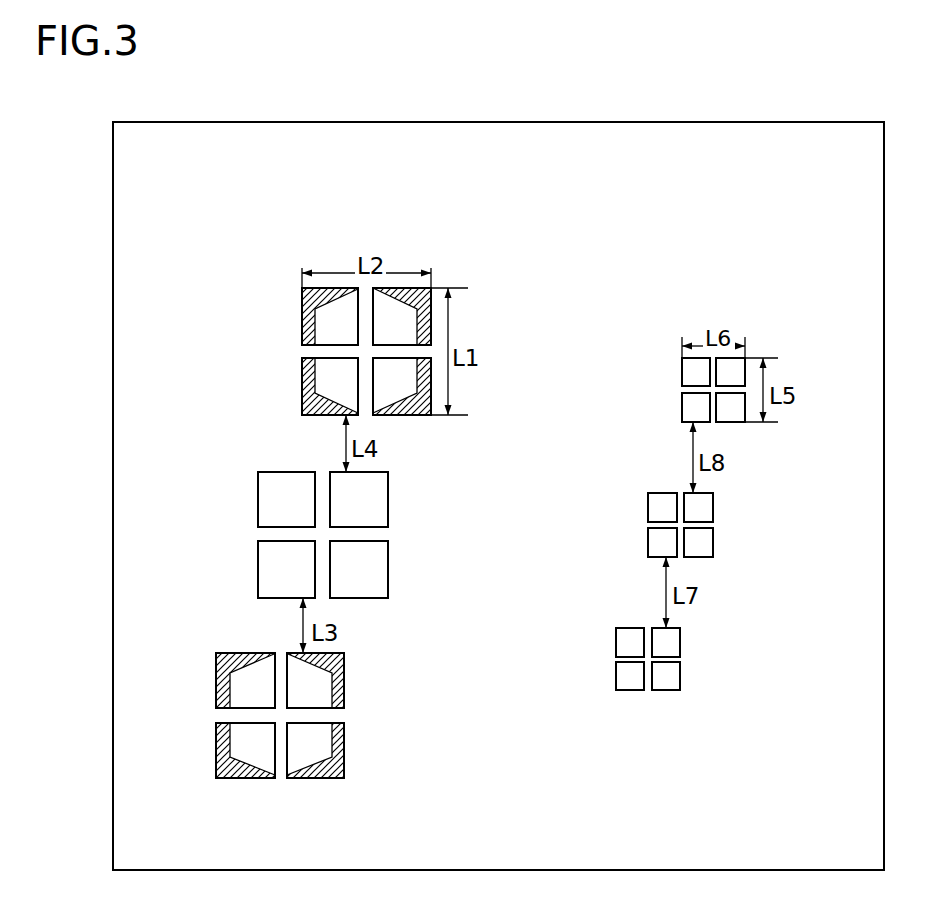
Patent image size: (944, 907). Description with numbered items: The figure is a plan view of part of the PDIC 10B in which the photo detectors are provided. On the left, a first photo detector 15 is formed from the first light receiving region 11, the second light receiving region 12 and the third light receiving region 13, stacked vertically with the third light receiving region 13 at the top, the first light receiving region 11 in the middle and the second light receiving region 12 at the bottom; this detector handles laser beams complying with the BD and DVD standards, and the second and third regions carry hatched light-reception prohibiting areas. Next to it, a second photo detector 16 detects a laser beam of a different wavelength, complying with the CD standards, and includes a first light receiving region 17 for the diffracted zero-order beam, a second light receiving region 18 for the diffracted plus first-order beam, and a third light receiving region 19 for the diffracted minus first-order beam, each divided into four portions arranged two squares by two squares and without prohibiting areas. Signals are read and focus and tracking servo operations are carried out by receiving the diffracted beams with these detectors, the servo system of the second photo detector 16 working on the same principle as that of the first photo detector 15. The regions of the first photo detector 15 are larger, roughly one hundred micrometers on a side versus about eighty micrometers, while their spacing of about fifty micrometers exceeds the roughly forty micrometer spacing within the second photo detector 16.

The PDIC 10B is at (498, 478).
The first light receiving region 11 is at (249, 536).
The second light receiving region 12 is at (207, 716).
The third light receiving region 13 is at (291, 355).
The first photo detector 15 is at (430, 247).
The second photo detector 16 is at (580, 304).
The first light receiving region 17 is at (640, 526).
The second light receiving region 18 is at (607, 658).
The third light receiving region 19 is at (673, 393).